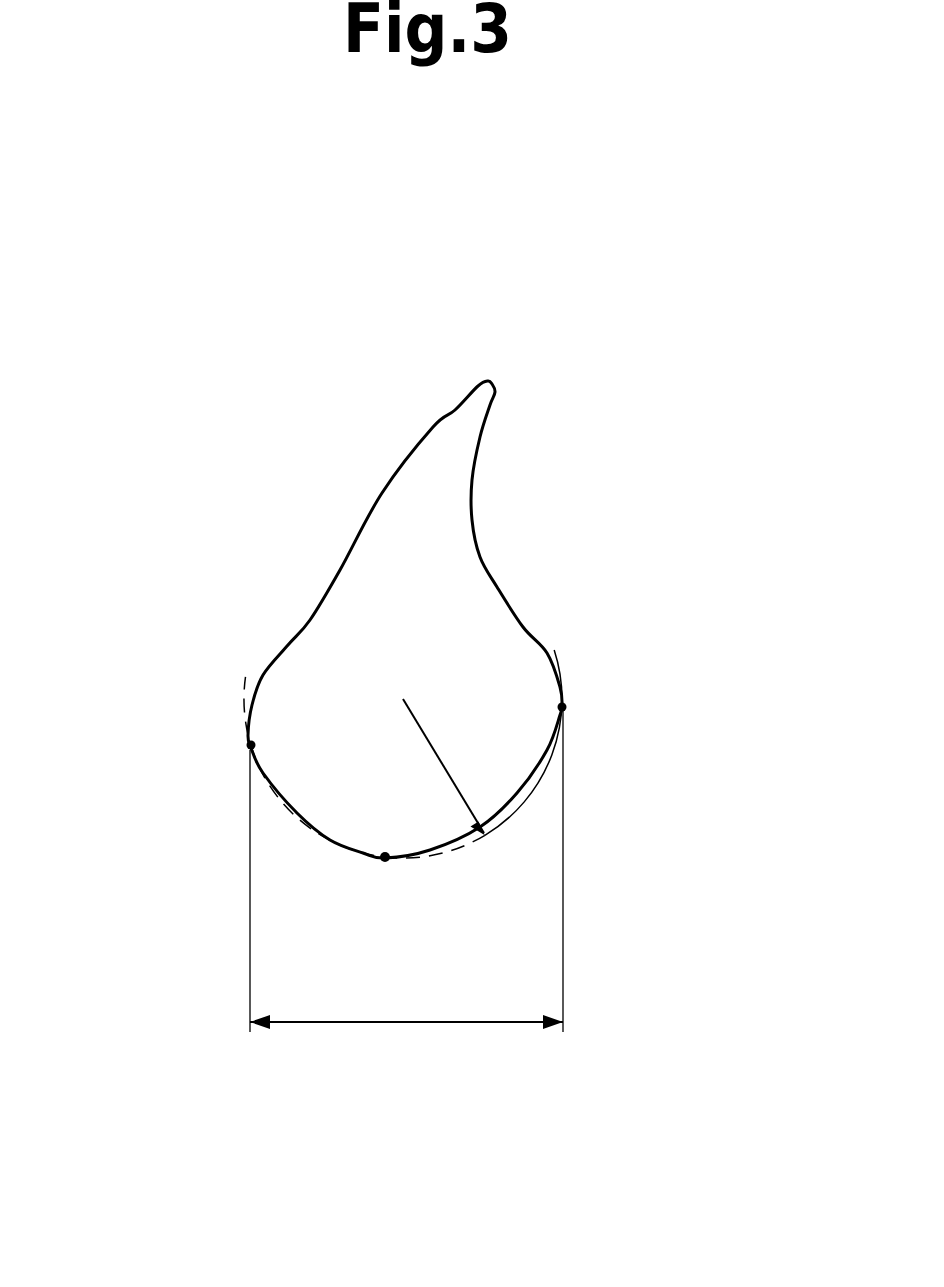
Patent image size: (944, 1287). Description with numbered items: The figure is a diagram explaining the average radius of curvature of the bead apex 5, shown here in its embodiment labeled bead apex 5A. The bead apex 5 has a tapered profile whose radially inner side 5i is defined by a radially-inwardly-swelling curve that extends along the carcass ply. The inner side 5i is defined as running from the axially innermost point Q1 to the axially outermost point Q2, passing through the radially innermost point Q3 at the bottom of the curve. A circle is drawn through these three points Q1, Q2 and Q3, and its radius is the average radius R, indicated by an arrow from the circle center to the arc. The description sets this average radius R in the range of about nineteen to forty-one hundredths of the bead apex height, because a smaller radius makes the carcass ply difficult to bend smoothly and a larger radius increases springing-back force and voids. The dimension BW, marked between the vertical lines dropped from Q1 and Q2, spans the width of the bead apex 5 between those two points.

The bead apex 5 is at (438, 542).
The blade (first embodiment) 5A is at (475, 619).
The radially inner side of the bead apex 5i is at (462, 842).
The average radius R is at (421, 725).
The axially innermost point Q1 is at (240, 749).
The axially outermost point Q2 is at (573, 700).
The radially innermost point Q3 is at (383, 866).
The blade width BW is at (412, 1023).